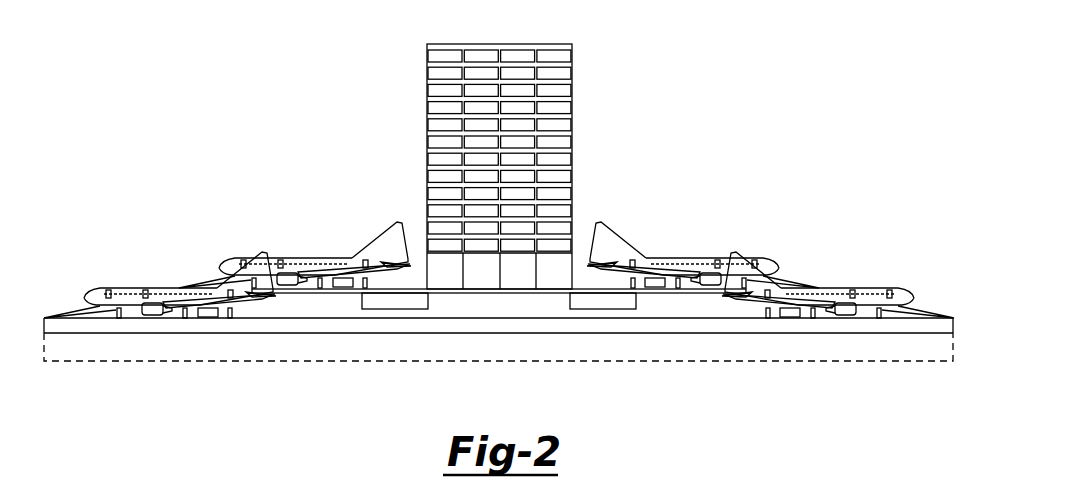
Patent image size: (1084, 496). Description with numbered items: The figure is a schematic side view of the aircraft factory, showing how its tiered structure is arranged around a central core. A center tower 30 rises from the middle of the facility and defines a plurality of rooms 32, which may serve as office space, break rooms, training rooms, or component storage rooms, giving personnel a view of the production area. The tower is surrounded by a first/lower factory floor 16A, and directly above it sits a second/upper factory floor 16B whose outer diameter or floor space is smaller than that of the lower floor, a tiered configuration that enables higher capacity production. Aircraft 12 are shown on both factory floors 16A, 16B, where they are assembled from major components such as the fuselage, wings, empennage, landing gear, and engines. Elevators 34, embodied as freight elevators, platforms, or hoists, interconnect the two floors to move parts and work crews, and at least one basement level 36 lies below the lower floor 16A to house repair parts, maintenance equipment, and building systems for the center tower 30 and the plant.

The aircraft 12 is at (161, 266).
The first/lower factory floor 16A is at (931, 310).
The second/upper factory floor 16B is at (418, 280).
The center tower 30 is at (591, 152).
The rooms 32 is at (565, 110).
The elevators 34 is at (386, 302).
The basement level 36 is at (825, 360).